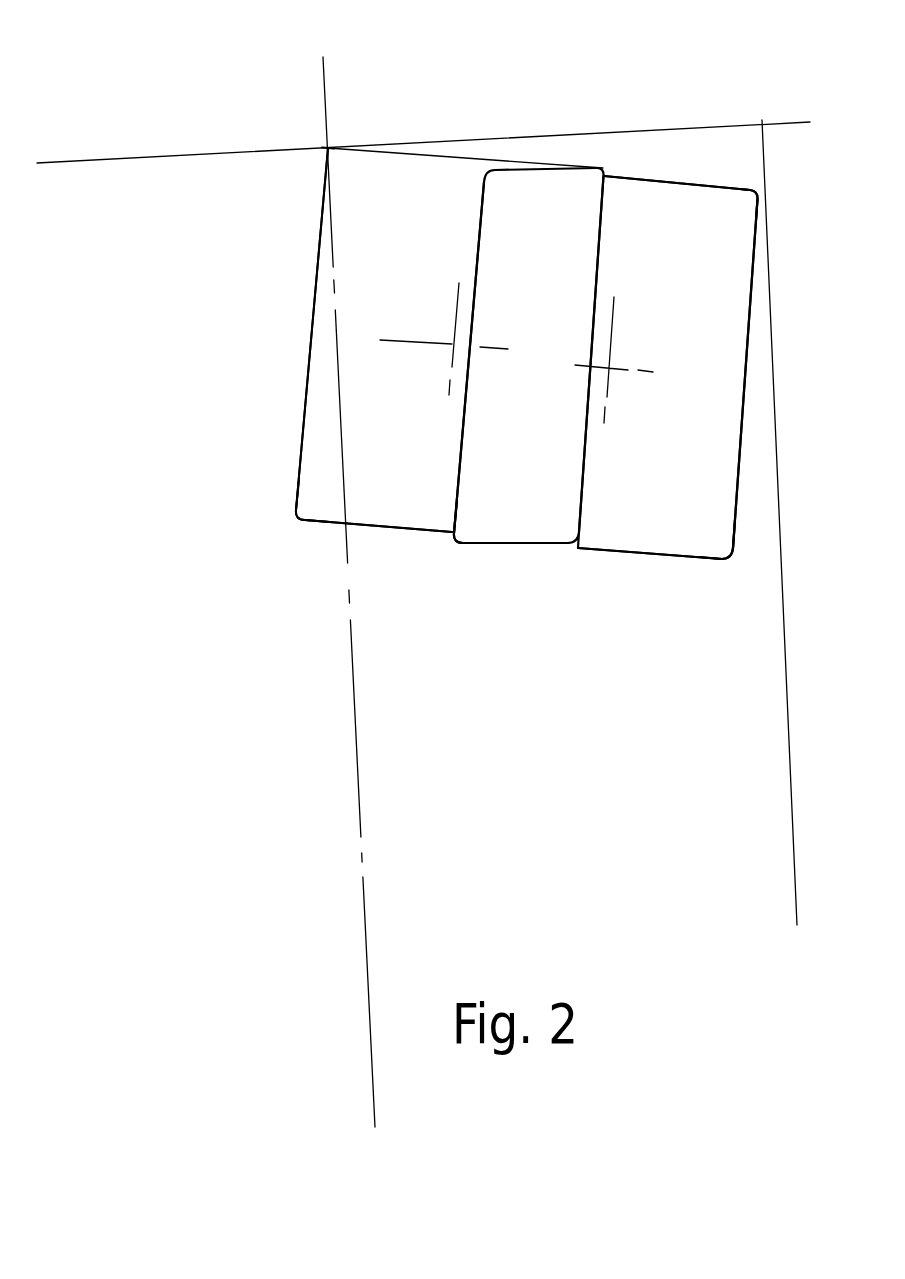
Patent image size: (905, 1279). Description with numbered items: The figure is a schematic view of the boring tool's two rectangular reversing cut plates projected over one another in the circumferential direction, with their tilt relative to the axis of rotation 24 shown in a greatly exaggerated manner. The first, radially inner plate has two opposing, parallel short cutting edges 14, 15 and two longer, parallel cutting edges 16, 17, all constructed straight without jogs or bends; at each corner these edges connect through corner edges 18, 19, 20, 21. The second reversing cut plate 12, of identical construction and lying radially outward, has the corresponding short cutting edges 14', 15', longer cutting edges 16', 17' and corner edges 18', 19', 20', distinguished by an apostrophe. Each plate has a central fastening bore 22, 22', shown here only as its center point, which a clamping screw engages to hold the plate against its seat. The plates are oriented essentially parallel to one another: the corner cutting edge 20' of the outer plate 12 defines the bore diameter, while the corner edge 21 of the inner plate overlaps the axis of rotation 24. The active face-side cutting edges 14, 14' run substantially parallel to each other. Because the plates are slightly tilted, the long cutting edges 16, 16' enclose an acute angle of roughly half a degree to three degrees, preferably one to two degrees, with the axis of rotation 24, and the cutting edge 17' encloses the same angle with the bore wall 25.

The second reversing cut plate 12 is at (672, 302).
The short cutting edge 14 is at (523, 284).
The short cutting edge 14' is at (668, 367).
The short cutting edge 15 is at (378, 619).
The short cutting edge 15' is at (515, 628).
The long cutting edge 16 is at (208, 329).
The long cutting edge 16' is at (516, 357).
The long cutting edge 17 is at (682, 111).
The long cutting edge 17' is at (786, 373).
The corner edge 18 is at (228, 558).
The corner edge 18' is at (494, 492).
The corner edge 19 is at (649, 631).
The corner edge 19' is at (680, 515).
The corner edge 20 is at (606, 273).
The corner cutting edge 20' is at (727, 272).
The corner edge 21 is at (328, 147).
The central fastening bore 22 is at (436, 362).
The central fastening bore 22' is at (640, 376).
The axis of rotation 24 is at (360, 763).
The bore wall 25 is at (788, 707).